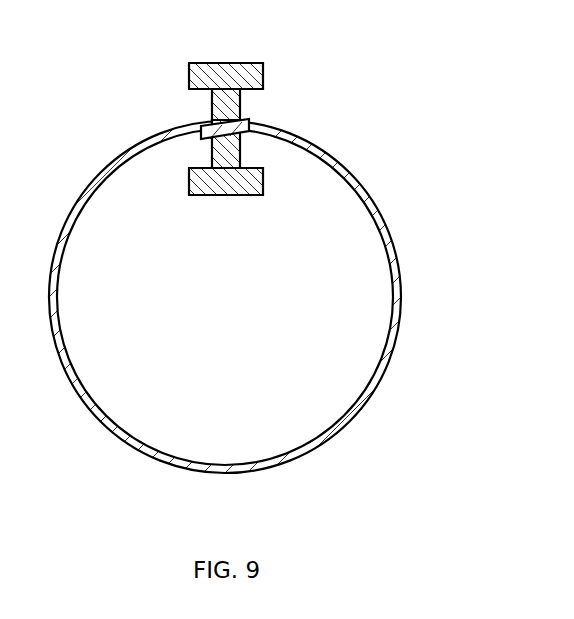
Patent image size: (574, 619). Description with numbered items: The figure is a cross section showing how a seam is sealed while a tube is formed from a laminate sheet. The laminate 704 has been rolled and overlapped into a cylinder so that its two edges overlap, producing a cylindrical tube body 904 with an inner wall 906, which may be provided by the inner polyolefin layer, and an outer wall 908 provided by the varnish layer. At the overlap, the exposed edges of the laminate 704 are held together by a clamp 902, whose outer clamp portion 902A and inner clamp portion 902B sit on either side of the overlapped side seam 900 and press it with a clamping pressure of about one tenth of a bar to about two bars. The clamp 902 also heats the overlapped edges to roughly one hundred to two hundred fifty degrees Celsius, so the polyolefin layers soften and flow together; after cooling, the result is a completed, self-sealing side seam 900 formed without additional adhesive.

The laminate 704 is at (397, 337).
The side seam 900 is at (268, 127).
The clamp 902 is at (150, 109).
The outer clamp portion 902A is at (205, 63).
The inner clamp portion 902B is at (189, 182).
The cylindrical tube body 904 is at (415, 148).
The inner wall 906 is at (92, 378).
The outer wall 908 is at (407, 365).